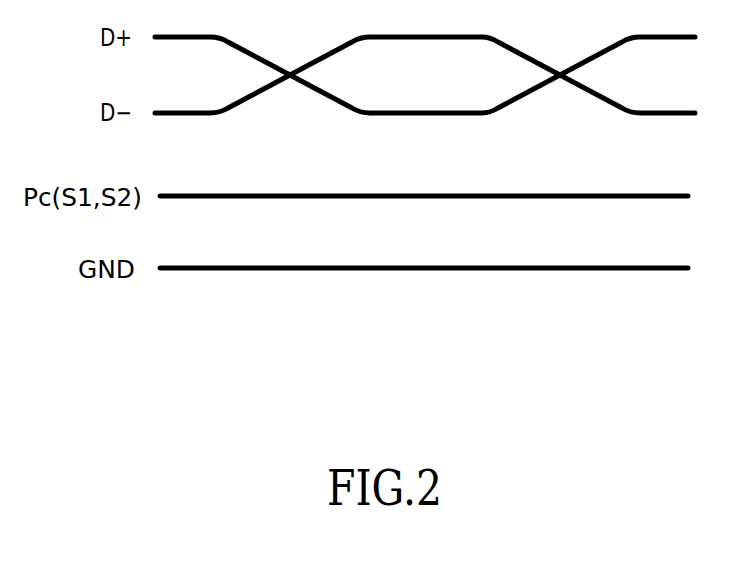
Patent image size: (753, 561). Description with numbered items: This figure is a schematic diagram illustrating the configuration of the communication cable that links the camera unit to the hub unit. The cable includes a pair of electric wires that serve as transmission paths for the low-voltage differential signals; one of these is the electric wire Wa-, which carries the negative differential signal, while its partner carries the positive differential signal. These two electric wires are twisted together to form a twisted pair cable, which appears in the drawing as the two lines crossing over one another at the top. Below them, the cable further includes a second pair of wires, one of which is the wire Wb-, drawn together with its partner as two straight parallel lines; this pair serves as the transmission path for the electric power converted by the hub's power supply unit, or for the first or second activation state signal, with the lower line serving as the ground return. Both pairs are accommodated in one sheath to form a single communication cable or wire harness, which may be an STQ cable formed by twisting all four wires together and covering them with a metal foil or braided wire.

The electric wire Wa- is at (242, 102).
The wire Wb- is at (283, 270).